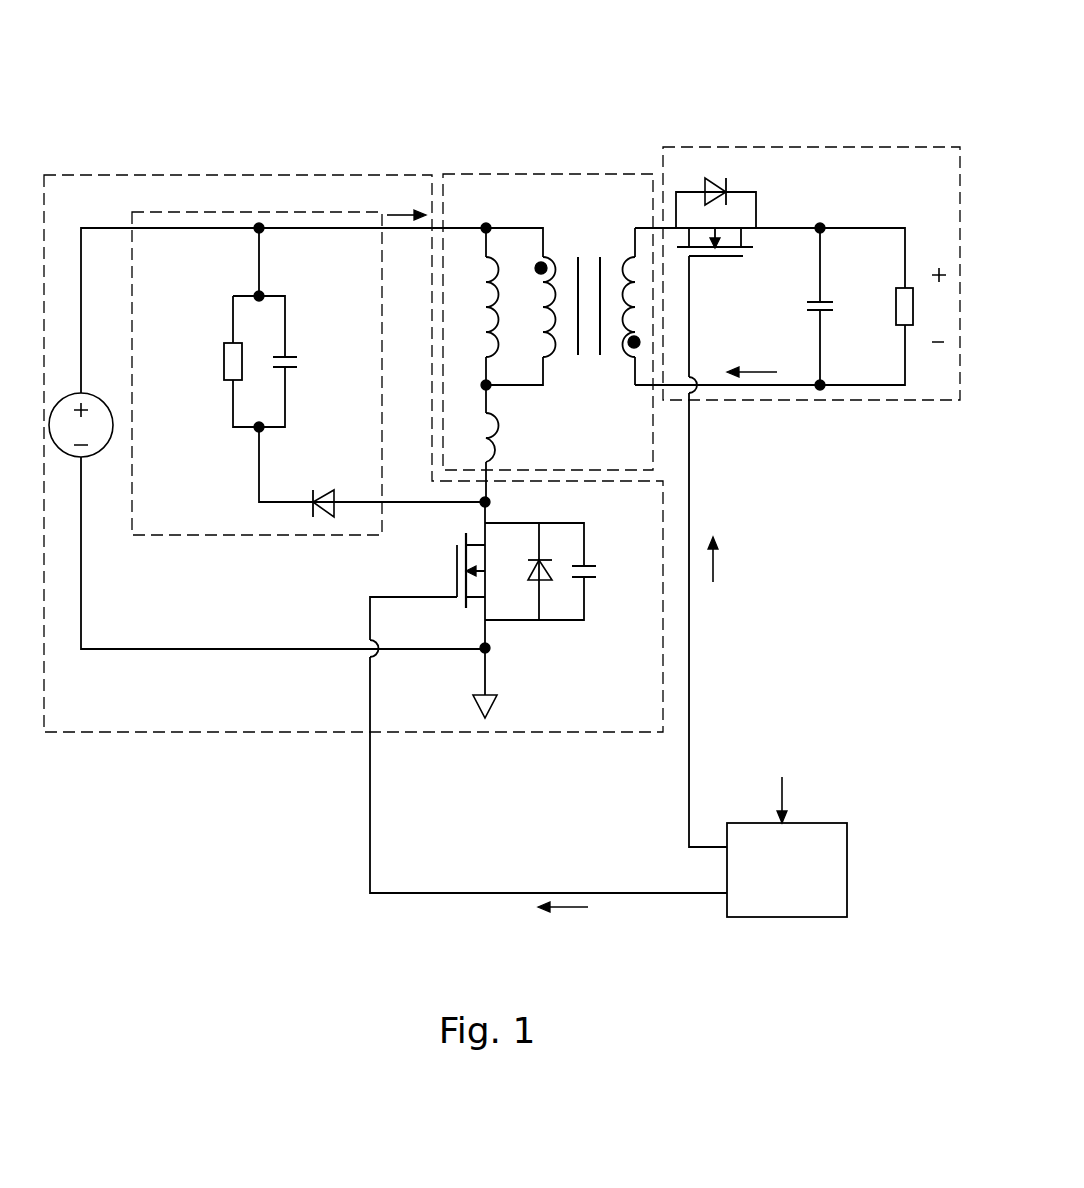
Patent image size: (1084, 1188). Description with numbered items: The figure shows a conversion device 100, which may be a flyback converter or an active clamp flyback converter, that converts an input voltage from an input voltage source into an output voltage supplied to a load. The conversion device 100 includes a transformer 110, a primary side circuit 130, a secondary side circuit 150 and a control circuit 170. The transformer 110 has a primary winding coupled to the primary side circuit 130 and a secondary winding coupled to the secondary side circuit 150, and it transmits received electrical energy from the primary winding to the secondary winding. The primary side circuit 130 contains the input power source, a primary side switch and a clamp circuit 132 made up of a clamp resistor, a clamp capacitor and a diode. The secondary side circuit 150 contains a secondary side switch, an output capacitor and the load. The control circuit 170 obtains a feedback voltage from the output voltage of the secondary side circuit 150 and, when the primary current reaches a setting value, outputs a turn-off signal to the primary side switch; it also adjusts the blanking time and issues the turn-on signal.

The conversion device 100 is at (180, 43).
The primary side circuit 130 is at (281, 173).
The clamp circuit 132 is at (345, 212).
The transformer 110 is at (591, 173).
The secondary side circuit 150 is at (814, 146).
The control circuit 170 is at (849, 823).